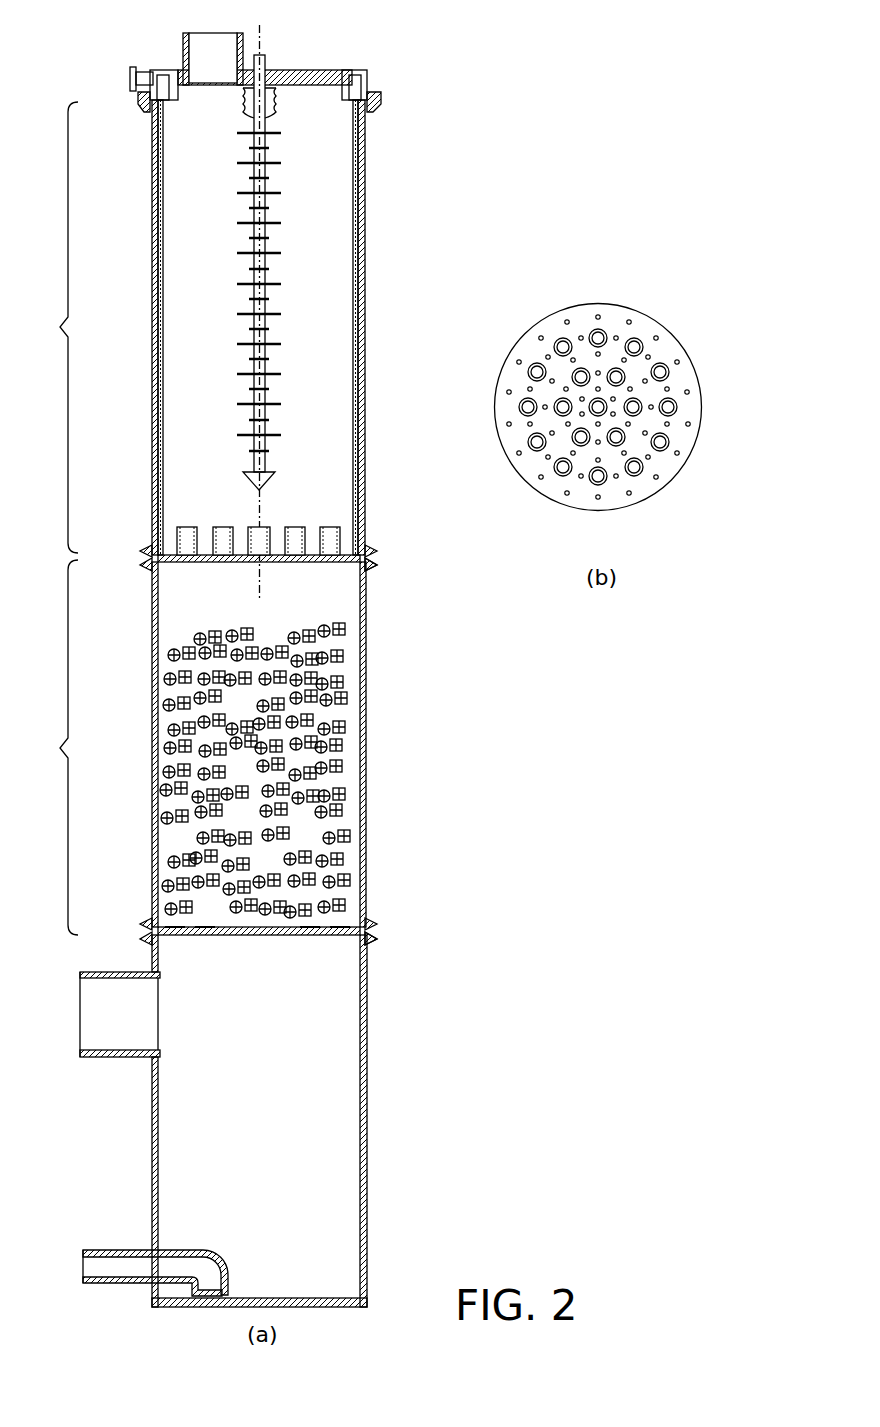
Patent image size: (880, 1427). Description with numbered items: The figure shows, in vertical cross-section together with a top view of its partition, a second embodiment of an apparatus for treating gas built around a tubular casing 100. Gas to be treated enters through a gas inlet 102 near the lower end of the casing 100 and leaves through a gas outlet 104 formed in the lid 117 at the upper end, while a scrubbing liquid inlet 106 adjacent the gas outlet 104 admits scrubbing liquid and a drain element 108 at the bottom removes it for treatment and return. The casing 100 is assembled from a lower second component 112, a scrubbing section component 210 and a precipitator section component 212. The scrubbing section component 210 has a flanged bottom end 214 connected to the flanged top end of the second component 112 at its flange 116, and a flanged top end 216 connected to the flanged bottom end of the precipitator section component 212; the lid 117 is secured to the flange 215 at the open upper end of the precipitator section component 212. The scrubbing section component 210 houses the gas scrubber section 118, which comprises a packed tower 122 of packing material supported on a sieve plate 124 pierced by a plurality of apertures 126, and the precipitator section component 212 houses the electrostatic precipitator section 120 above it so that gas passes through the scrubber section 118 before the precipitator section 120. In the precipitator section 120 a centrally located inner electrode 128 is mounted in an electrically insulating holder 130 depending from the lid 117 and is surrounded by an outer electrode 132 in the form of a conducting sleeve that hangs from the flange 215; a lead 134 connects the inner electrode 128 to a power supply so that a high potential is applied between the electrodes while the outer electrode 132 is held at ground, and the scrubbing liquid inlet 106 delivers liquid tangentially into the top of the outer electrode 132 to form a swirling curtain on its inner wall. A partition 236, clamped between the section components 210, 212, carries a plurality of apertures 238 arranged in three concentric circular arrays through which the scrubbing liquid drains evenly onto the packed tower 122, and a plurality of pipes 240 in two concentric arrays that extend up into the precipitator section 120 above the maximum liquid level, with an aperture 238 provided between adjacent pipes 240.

The casing 100 is at (372, 690).
The gas inlet 102 is at (118, 1058).
The gas outlet 104 is at (183, 47).
The scrubbing liquid inlet 106 is at (130, 78).
The drain element 108 is at (118, 1250).
The second component 112 is at (368, 1070).
The flange 116 is at (378, 945).
The lid 117 is at (300, 70).
The gas scrubber section 118 is at (44, 747).
The electrostatic precipitator section 120 is at (44, 327).
The packed tower 122 is at (358, 750).
The sieve plate 124 is at (240, 937).
The apertures 126 is at (197, 937).
The inner electrode 128 is at (278, 233).
The electrically insulating holder 130 is at (285, 100).
The outer electrode 132 is at (164, 268).
The lead 134 is at (258, 30).
The scrubbing section component 210 is at (152, 715).
The precipitator section component 212 is at (155, 222).
The flanged bottom end 214 is at (378, 548).
The flange 215 is at (378, 108).
The flanged top end 216 is at (378, 570).
The partition 236 is at (279, 563).
The apertures 238 is at (233, 563).
The pipes 240 is at (330, 527).